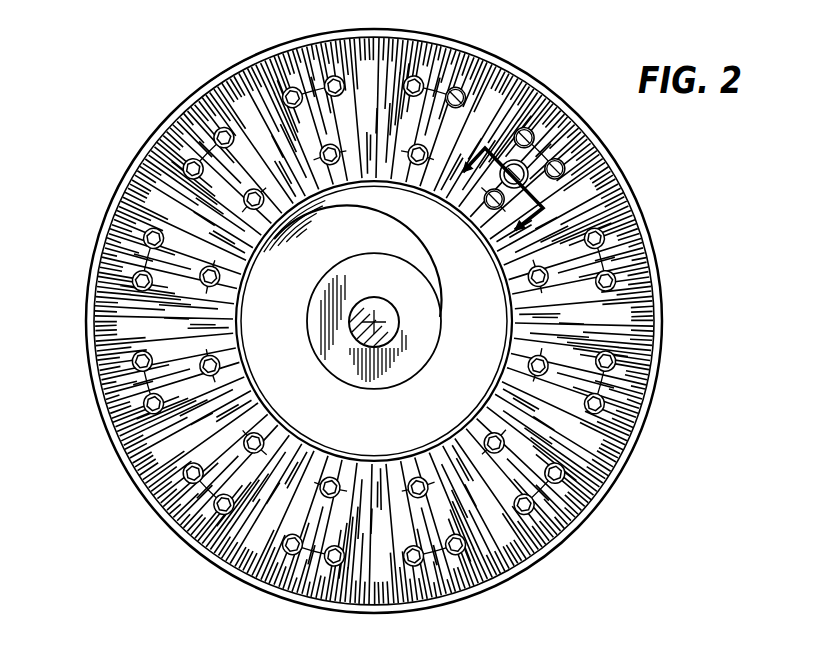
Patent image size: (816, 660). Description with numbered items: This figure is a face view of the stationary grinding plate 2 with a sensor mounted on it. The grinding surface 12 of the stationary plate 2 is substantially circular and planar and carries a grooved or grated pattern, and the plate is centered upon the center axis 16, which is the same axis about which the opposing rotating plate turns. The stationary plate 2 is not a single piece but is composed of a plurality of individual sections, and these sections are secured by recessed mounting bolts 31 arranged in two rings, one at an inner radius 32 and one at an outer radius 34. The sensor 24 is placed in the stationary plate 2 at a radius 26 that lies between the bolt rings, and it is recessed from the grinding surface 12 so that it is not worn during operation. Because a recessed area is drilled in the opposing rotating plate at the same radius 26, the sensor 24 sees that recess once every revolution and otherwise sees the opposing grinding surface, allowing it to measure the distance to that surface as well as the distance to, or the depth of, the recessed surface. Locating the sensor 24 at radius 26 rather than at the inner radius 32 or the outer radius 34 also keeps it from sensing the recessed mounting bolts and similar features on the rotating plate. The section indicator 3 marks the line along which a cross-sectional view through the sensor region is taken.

The stationary plate 2 is at (98, 240).
The grinding surface 12 is at (568, 108).
The center axis 16 is at (384, 302).
The sensor 24 is at (514, 174).
The radius 26 is at (450, 137).
The recessed mounting bolts 31 is at (182, 168).
The inner radius 32 is at (478, 243).
The outer radius 34 is at (232, 82).
The section line 3- 3 is at (496, 204).